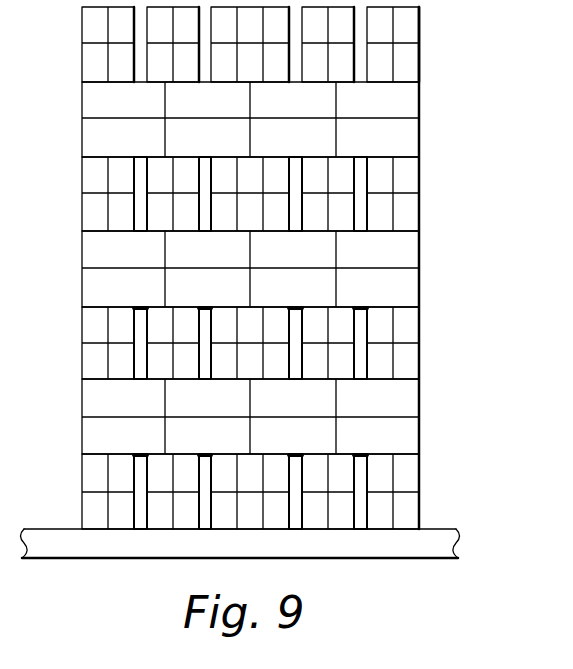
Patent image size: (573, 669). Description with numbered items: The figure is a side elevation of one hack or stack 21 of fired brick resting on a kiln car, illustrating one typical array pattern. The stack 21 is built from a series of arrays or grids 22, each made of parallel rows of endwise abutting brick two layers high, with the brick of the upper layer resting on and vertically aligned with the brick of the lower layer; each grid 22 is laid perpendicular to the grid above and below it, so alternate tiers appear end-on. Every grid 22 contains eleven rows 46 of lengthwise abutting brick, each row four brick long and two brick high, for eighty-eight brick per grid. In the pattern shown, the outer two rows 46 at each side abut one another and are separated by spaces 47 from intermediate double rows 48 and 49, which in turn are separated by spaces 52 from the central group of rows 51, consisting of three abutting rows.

The stack 21 is at (255, 282).
The array or grid 22 is at (282, 82).
The rows 46 is at (115, 210).
The spaces 47 is at (252, 119).
The double rows 48 is at (167, 75).
The double rows 49 is at (322, 75).
The central group of rows 51 is at (230, 157).
The spaces 52 is at (297, 157).